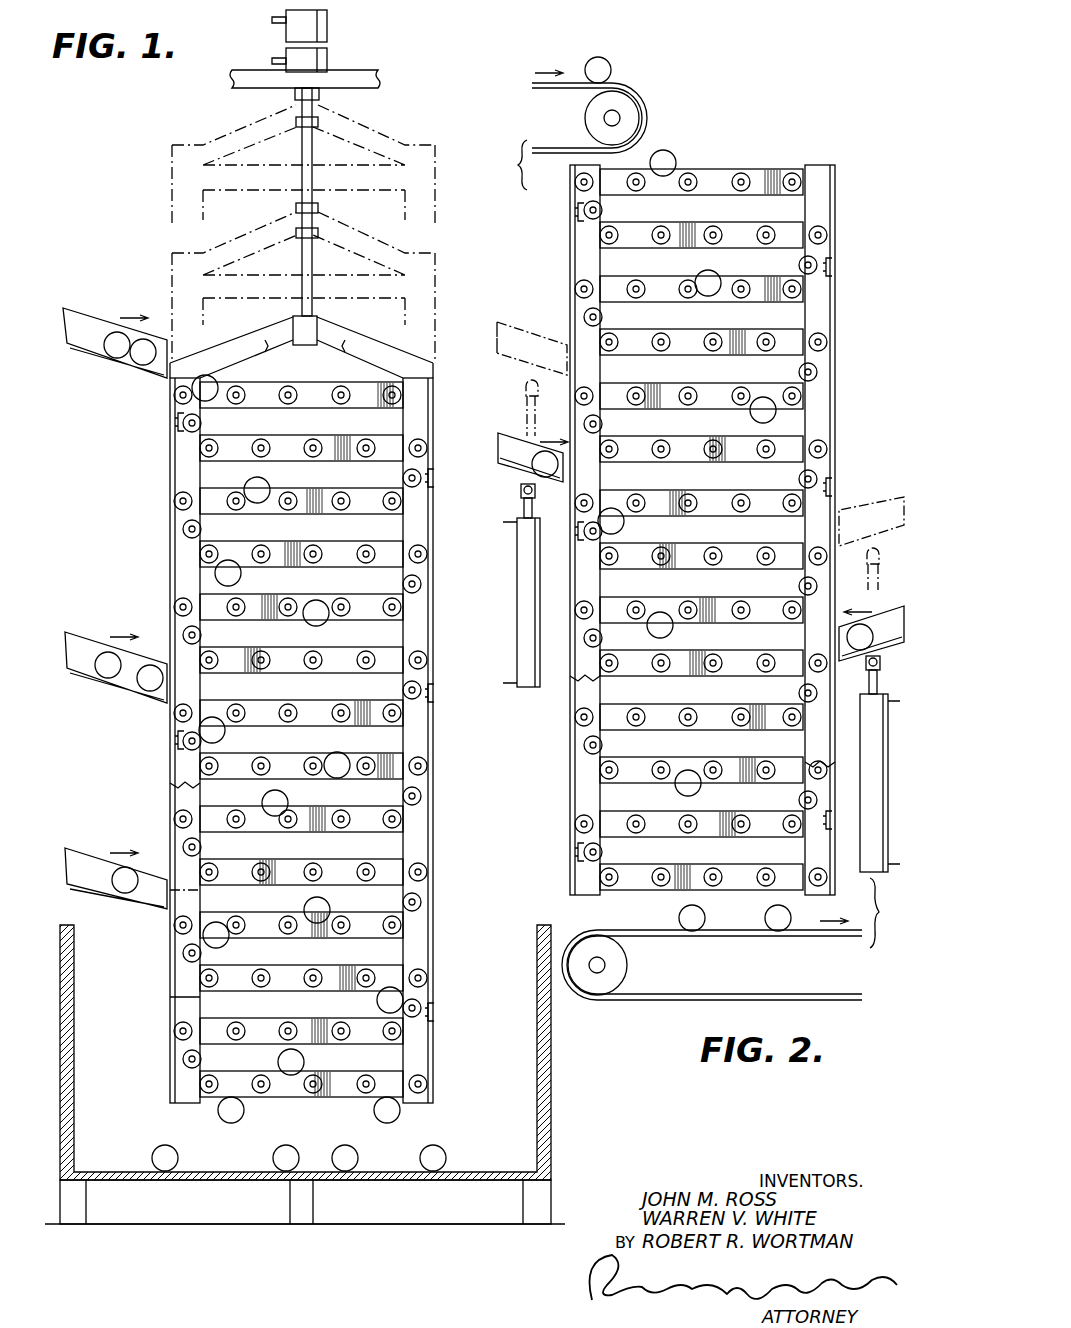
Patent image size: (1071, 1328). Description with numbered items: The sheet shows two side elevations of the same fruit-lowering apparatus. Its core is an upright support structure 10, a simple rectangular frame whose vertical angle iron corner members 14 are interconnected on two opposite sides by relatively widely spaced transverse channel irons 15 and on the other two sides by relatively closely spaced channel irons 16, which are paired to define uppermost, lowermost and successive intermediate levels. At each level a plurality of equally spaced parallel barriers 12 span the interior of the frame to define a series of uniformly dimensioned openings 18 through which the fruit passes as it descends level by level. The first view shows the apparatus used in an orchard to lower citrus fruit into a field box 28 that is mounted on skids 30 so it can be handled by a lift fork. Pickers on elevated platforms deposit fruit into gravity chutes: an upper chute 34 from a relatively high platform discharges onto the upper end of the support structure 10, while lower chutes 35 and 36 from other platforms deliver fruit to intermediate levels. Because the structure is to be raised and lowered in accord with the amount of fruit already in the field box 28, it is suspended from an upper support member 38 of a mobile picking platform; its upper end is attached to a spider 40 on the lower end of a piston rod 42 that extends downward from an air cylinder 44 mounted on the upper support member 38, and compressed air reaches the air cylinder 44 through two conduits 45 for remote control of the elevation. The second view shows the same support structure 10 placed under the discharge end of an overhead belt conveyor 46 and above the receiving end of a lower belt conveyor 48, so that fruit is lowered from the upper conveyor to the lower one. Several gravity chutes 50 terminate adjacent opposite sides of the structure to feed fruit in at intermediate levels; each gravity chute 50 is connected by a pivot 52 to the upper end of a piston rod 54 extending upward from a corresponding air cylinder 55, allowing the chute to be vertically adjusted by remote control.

In FIG. 1, the upright support structure 10 is at (293, 641).
In FIG. 2, the upright support structure 10 is at (702, 513).
In FIG. 1, the barriers 12 is at (336, 382).
In FIG. 2, the barriers 12 is at (738, 171).
In FIG. 1, the vertical angle iron corner members 14 is at (435, 192).
In FIG. 2, the vertical angle iron corner members 14 is at (582, 246).
In FIG. 1, the transverse channel irons 15 is at (176, 425).
In FIG. 2, the transverse channel irons 15 is at (827, 478).
In FIG. 1, the channel irons 16 is at (374, 518).
In FIG. 2, the channel irons 16 is at (694, 386).
In FIG. 1, the openings 18 is at (249, 446).
In FIG. 2, the openings 18 is at (687, 473).
In FIG. 1, the field box 28 is at (547, 1120).
In FIG. 1, the skids 30 is at (86, 1204).
In FIG. 1, the upper chute 34 is at (105, 360).
In FIG. 1, the lower chute 35 is at (84, 682).
In FIG. 1, the lower chute 36 is at (96, 890).
In FIG. 1, the upper support member 38 is at (375, 88).
In FIG. 1, the spider 40 is at (252, 125).
In FIG. 1, the piston rod 42 is at (312, 200).
In FIG. 1, the air cylinder 44 is at (330, 40).
In FIG. 1, the conduits 45 is at (280, 62).
In FIG. 2, the overhead belt conveyor 46 is at (640, 97).
In FIG. 2, the lower belt conveyor 48 is at (598, 934).
In FIG. 2, the gravity chutes 50 is at (540, 333).
In FIG. 2, the pivot 52 is at (521, 492).
In FIG. 2, the piston rod 54 is at (518, 528).
In FIG. 2, the air cylinder 55 is at (525, 552).